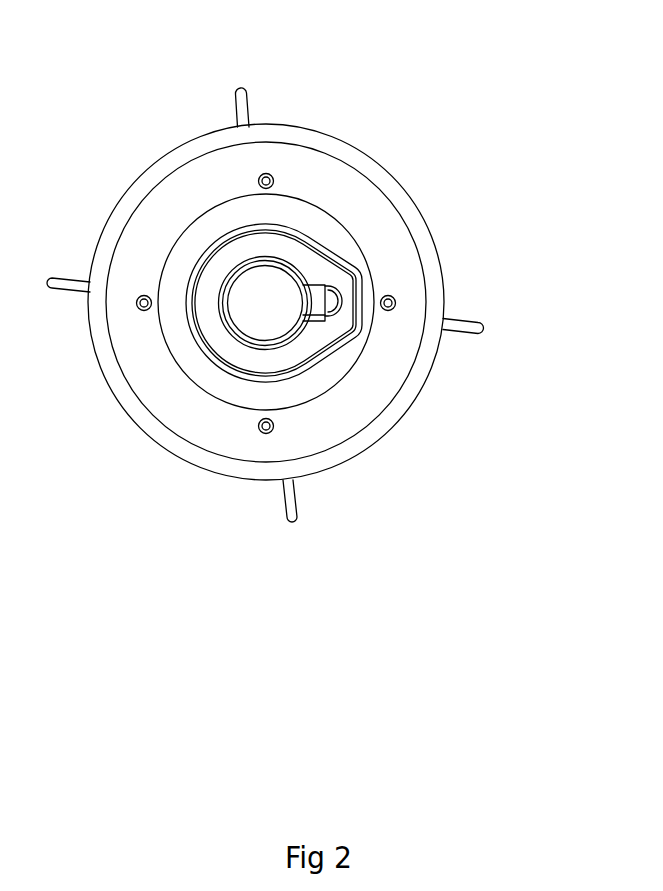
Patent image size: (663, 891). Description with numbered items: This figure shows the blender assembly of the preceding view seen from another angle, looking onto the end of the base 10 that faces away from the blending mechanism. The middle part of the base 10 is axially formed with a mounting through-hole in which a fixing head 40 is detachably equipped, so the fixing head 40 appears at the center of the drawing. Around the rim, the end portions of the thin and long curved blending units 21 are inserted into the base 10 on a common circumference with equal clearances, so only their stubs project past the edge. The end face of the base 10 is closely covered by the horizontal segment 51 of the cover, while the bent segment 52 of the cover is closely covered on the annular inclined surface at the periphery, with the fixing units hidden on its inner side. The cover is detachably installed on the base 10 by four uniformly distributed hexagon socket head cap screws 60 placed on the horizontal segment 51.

The base 10 is at (197, 240).
The blending unit 21 is at (245, 97).
The fixing head 40 is at (308, 347).
The horizontal segment 51 is at (268, 173).
The bent segment 52 is at (413, 227).
The hexagon socket head cap screw 60 is at (340, 198).